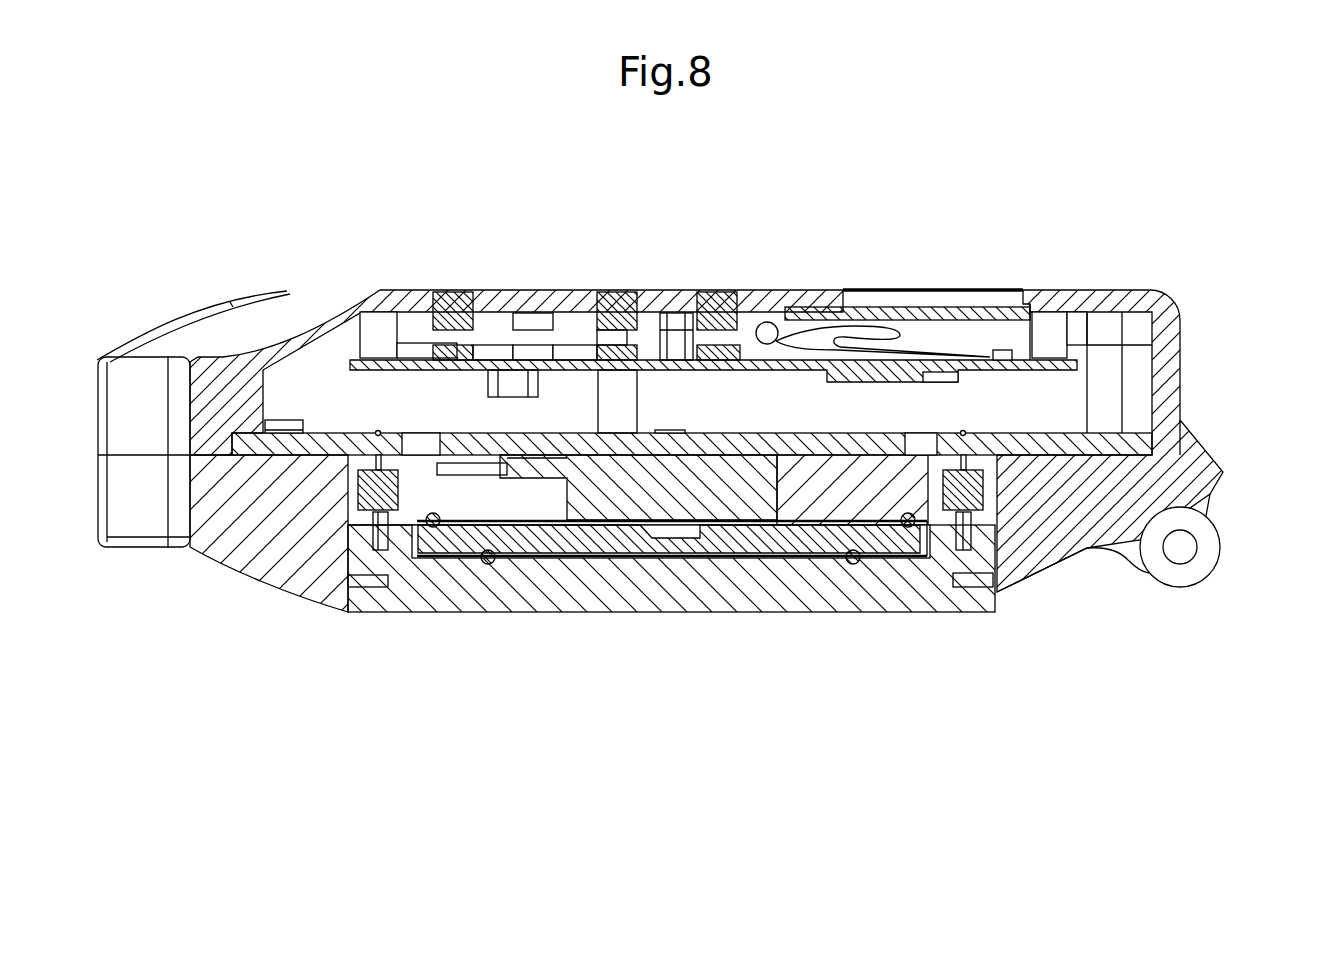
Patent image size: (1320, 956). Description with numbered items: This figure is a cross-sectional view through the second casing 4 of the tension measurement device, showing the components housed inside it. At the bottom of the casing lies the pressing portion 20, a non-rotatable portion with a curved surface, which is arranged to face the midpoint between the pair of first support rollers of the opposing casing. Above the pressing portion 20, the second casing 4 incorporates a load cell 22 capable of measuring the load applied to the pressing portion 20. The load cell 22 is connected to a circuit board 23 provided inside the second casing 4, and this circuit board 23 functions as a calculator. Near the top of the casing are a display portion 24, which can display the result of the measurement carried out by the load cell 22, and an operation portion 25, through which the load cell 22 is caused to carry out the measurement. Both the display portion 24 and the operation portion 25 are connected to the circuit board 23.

The second casing 4 is at (377, 288).
The pressing portion 20 is at (669, 590).
The load cell 22 is at (730, 470).
The circuit board 23 is at (1065, 372).
The display portion 24 is at (883, 307).
The operation portion 25 is at (608, 290).